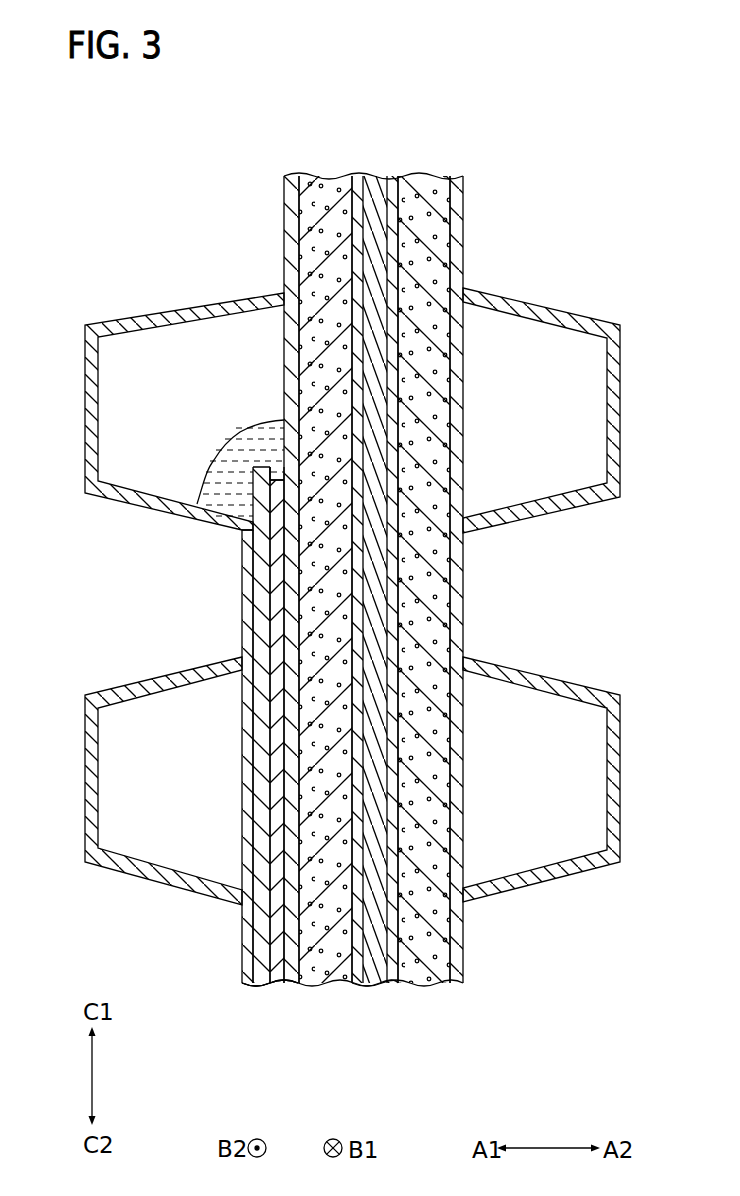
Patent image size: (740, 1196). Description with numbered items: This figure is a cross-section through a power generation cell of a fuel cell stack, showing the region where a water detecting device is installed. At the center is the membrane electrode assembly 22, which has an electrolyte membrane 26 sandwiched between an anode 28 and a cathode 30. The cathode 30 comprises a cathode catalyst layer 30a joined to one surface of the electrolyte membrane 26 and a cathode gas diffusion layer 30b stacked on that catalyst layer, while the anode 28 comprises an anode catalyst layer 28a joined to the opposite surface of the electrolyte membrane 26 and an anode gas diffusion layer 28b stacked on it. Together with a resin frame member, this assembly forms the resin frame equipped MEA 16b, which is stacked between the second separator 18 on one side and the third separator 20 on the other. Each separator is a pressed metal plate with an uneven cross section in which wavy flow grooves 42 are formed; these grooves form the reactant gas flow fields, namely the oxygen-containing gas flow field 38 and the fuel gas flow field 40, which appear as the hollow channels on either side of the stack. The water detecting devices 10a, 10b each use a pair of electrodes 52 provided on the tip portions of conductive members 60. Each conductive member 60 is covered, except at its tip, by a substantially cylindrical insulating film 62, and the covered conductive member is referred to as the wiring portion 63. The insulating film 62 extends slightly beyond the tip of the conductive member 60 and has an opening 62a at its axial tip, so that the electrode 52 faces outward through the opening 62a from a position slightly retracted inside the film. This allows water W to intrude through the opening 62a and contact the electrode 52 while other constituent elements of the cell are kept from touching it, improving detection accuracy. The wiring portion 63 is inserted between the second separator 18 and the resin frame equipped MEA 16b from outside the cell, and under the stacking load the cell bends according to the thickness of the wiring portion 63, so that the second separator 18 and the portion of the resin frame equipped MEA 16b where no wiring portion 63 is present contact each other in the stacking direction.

The water detecting device 10a is at (275, 987).
The water detecting device 10b is at (270, 1018).
The resin frame equipped MEA 16b is at (377, 995).
The second separator 18 is at (242, 970).
The third separator 20 is at (458, 963).
The membrane electrode assembly 22 is at (413, 76).
The electrolyte membrane 26 is at (378, 573).
The anode 28 is at (442, 532).
The anode catalyst layer 28a is at (417, 187).
The anode gas diffusion layer 28b is at (433, 187).
The cathode 30 is at (307, 532).
The cathode catalyst layer 30a is at (337, 182).
The cathode gas diffusion layer 30b is at (317, 190).
The oxygen-containing gas flow field 38 is at (174, 484).
The fuel gas flow field 40 is at (557, 469).
The wavy flow groove 42 is at (98, 810).
The electrode 52 is at (276, 478).
The conductive member 60 is at (278, 781).
The insulating film 62 is at (247, 579).
The opening 62a is at (274, 479).
The wiring portion 63 is at (228, 579).
The water W is at (222, 455).